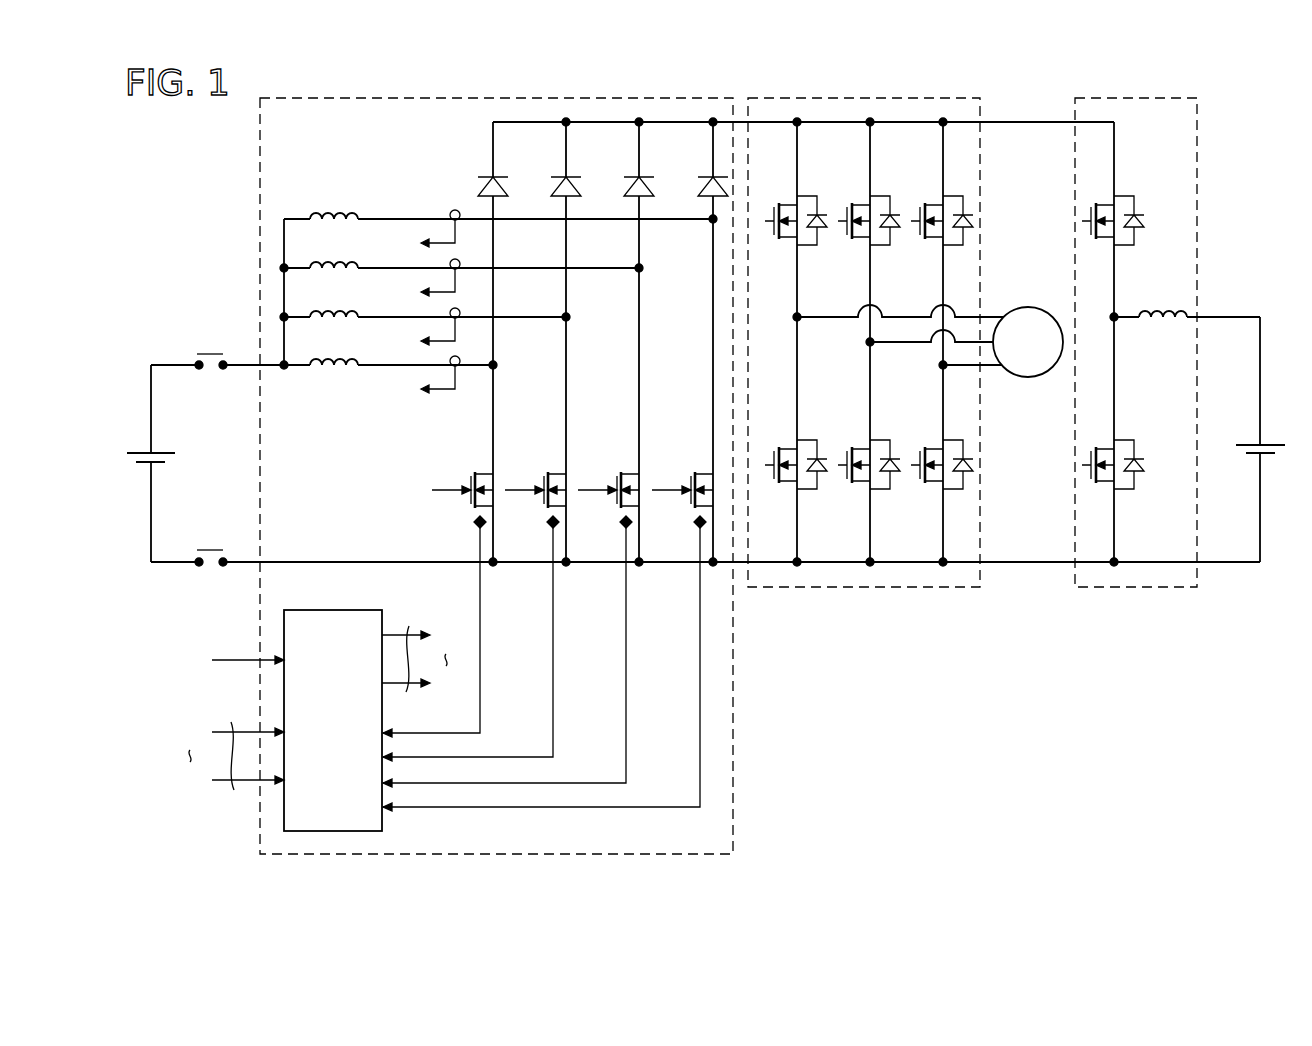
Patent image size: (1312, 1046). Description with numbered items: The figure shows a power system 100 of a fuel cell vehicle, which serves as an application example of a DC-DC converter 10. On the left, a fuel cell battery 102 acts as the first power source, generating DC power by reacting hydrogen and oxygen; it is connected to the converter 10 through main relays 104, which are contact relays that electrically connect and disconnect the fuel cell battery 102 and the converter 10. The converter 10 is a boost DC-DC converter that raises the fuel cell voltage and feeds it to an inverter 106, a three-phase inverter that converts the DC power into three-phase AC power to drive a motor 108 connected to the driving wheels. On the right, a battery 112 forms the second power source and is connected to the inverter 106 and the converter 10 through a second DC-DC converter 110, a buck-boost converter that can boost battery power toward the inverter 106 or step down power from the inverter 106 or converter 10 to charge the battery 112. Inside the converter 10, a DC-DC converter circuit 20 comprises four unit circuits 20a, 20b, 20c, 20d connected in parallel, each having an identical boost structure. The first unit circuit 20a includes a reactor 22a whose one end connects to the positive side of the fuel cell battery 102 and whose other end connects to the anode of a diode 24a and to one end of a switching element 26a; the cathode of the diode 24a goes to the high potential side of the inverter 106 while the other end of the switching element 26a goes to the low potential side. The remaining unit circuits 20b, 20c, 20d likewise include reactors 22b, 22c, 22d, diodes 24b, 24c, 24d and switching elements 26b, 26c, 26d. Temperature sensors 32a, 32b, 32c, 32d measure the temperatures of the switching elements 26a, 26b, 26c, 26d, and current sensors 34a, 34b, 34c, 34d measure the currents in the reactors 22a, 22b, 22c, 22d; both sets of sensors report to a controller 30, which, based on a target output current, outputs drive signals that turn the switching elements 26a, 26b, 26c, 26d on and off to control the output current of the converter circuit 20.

The DC-DC converter 10 is at (735, 718).
The DC-DC converter circuit 20 is at (373, 153).
The first unit circuit 20a is at (494, 148).
The second unit circuit 20b is at (567, 148).
The third unit circuit 20c is at (640, 148).
The fourth unit circuit 20d is at (714, 148).
The reactor 22a is at (314, 359).
The reactor 22b is at (314, 311).
The reactor 22c is at (314, 262).
The reactor 22d is at (314, 213).
The diode 24a is at (488, 178).
The diode 24b is at (561, 178).
The diode 24c is at (634, 178).
The diode 24d is at (708, 178).
The switching element 26a is at (486, 473).
The switching element 26b is at (559, 473).
The switching element 26c is at (632, 473).
The switching element 26d is at (706, 473).
The controller 30 is at (335, 610).
The first temperature sensor 32a is at (479, 530).
The second temperature sensor 32b is at (552, 530).
The third temperature sensor 32c is at (625, 530).
The fourth temperature sensor 32d is at (699, 530).
The first current sensor 34a is at (460, 368).
The second current sensor 34b is at (460, 320).
The third current sensor 34c is at (460, 271).
The fourth current sensor 34d is at (460, 222).
The power system 100 is at (1232, 123).
The fuel cell battery 102 is at (131, 450).
The main relay 104 is at (216, 354).
The inverter 106 is at (920, 587).
The motor 108 is at (1028, 378).
The second DC-DC converter 110 is at (1155, 587).
The battery 112 is at (1283, 440).